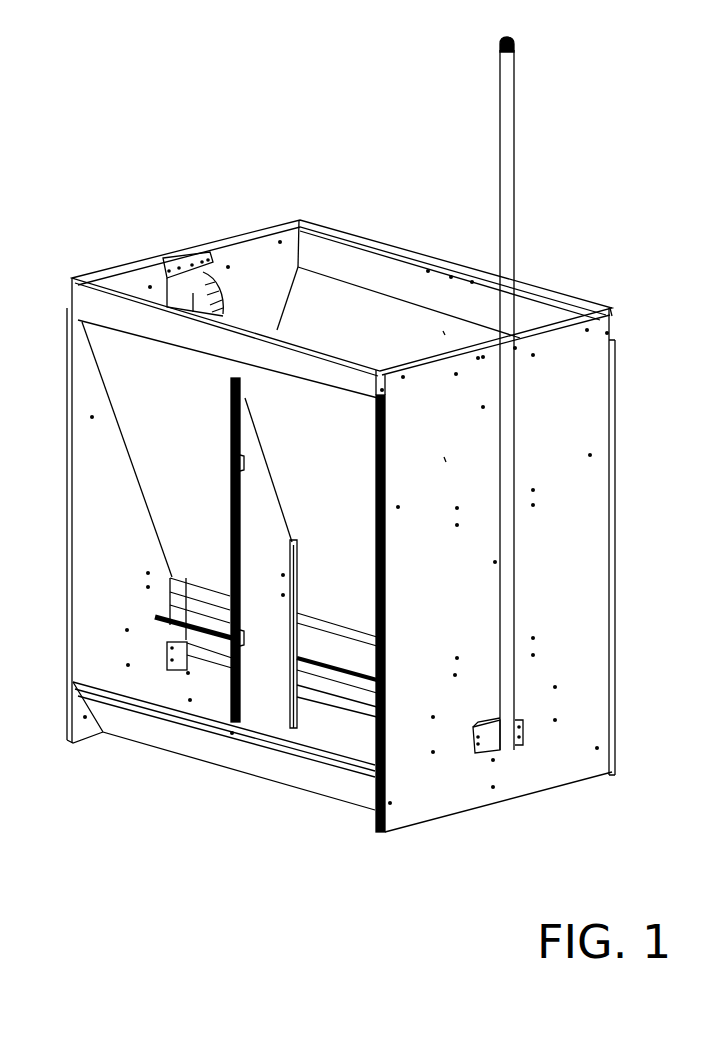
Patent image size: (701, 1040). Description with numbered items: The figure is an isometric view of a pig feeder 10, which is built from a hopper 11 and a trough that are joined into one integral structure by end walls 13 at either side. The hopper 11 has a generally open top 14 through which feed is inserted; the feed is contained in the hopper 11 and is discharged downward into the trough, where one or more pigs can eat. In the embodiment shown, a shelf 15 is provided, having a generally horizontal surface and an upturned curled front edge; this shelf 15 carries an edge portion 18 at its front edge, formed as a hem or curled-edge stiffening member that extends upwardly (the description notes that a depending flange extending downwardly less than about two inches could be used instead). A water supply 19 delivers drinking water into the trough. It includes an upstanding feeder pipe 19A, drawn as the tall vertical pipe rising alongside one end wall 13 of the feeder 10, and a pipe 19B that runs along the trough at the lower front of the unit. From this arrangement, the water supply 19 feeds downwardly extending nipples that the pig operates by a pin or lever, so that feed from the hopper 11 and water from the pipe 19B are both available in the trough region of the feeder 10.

The feeder 10 is at (583, 232).
The hopper 11 is at (170, 468).
The end walls 13 is at (115, 622).
The open top 14 is at (327, 303).
The shelf 15 is at (190, 612).
The edge portion 18 is at (338, 668).
The water supply 19 is at (506, 766).
The upstanding feeder pipe 19A is at (504, 599).
The pipe along the trough 19B is at (205, 655).